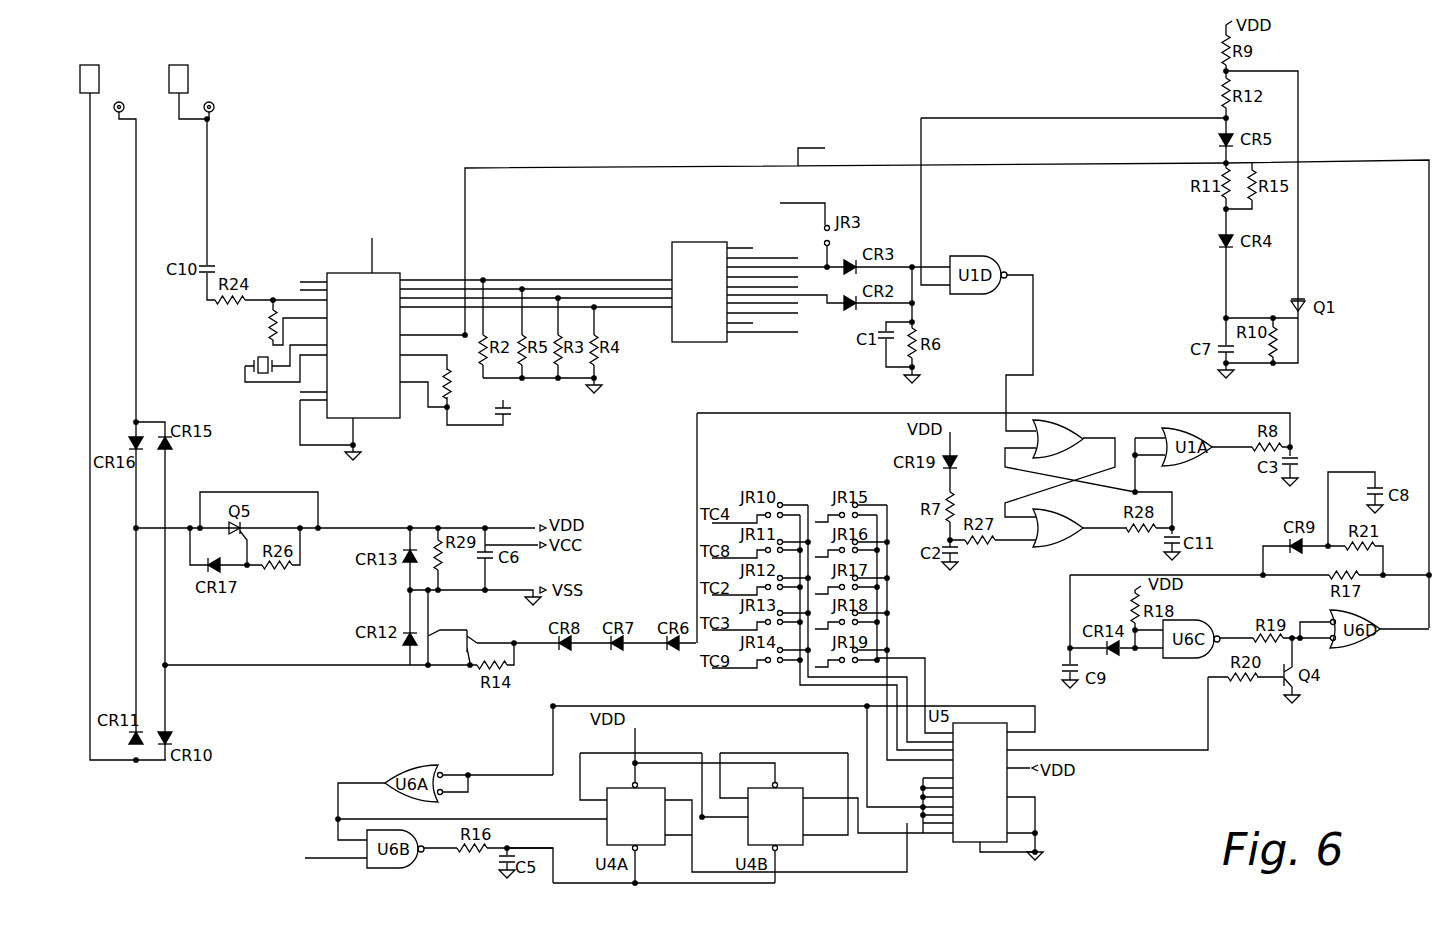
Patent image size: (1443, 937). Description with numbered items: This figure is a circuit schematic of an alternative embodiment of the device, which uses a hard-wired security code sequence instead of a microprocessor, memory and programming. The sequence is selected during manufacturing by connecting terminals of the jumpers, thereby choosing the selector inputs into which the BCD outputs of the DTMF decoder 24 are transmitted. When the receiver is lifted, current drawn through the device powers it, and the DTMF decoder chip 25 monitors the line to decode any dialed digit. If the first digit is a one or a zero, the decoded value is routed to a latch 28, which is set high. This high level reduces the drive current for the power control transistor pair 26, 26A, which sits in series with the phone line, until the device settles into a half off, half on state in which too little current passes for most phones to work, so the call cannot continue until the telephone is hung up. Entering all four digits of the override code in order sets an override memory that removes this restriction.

The DTMF decoder 24 is at (718, 241).
The DTMF decoder chip 25 is at (355, 272).
The power control transistor pair 26 is at (428, 655).
The power control transistor pair 26A is at (470, 650).
The latch 28 is at (1063, 413).